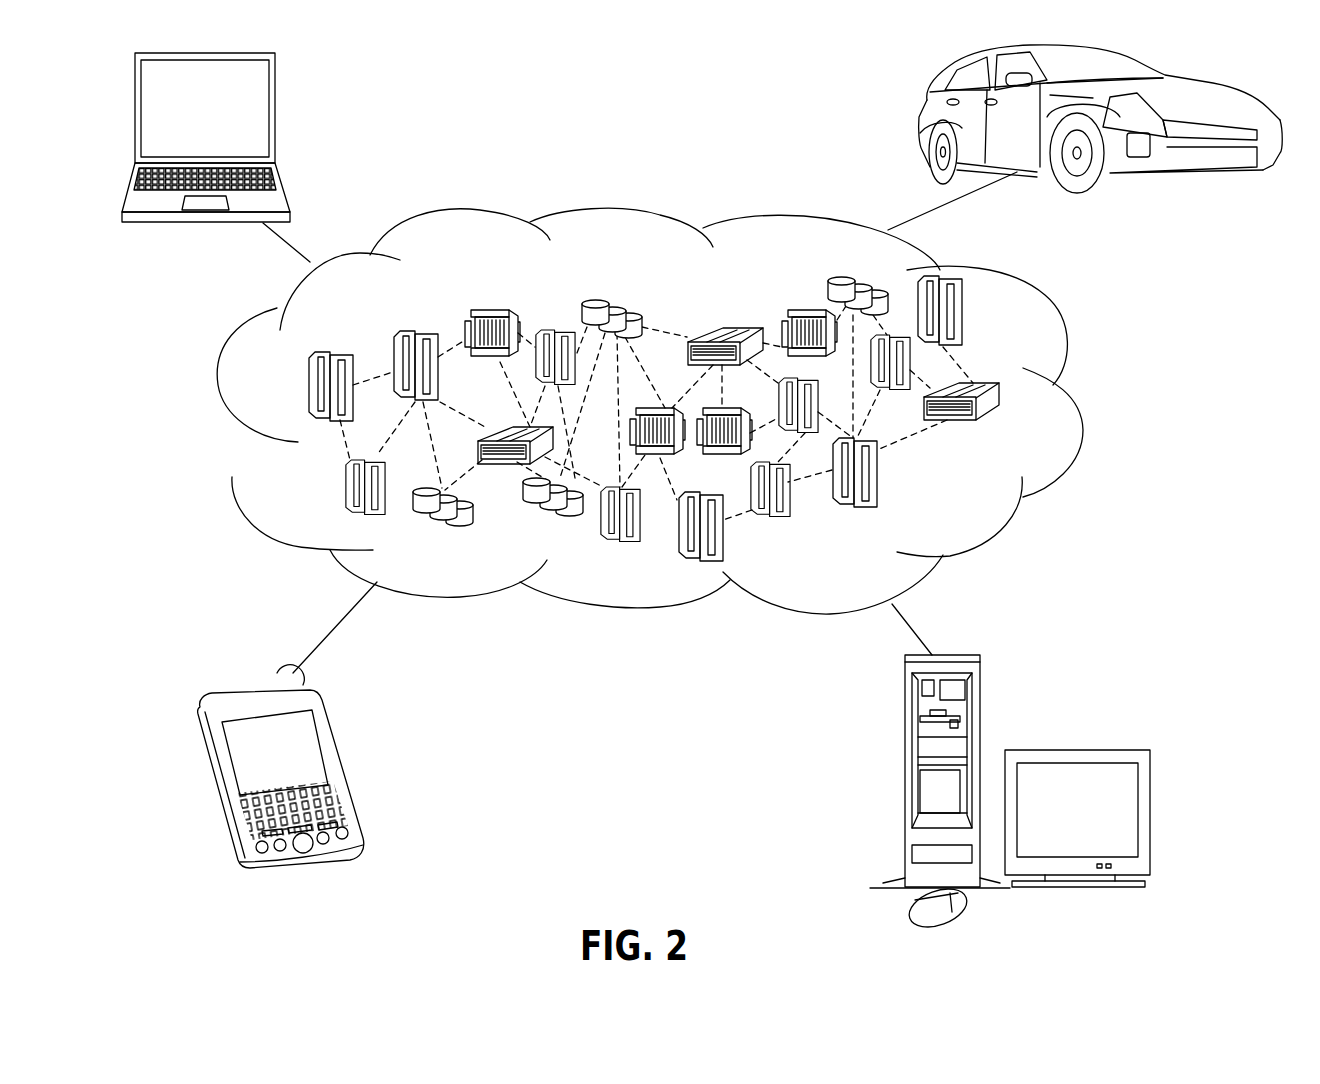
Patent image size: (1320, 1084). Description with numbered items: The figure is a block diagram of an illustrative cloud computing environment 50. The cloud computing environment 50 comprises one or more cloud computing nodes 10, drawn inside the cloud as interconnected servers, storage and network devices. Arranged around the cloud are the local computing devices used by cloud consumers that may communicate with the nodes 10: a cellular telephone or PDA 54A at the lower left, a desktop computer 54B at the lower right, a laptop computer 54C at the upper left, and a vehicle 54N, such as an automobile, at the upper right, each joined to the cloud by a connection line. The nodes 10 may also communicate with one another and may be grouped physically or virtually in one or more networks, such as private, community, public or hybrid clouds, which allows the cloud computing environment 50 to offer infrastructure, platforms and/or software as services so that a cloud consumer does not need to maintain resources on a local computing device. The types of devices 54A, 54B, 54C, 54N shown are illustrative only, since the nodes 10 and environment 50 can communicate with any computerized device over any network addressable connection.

The cloud computing node 10 is at (980, 502).
The cloud computing environment 50 is at (1072, 402).
The cellular telephone or PDA 54A is at (333, 731).
The desktop computer 54B is at (905, 712).
The laptop computer 54C is at (277, 92).
The vehicle 54N is at (918, 110).